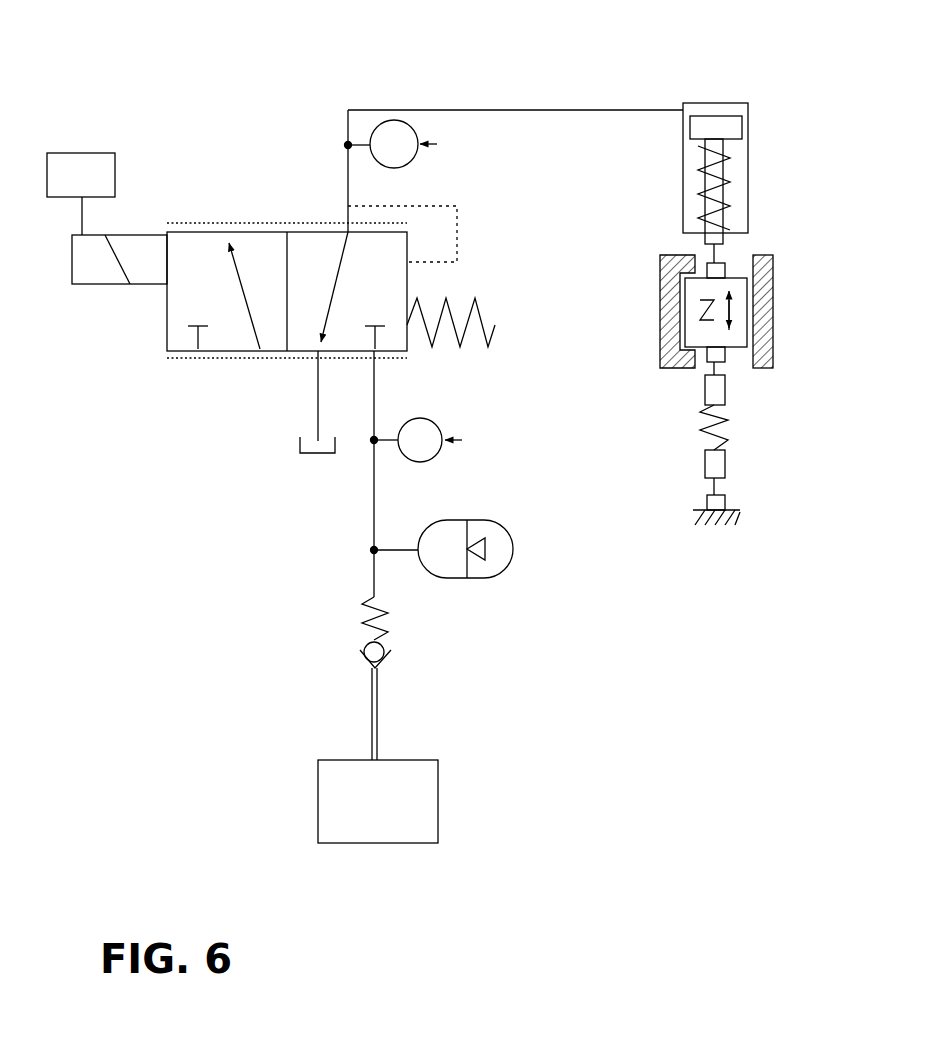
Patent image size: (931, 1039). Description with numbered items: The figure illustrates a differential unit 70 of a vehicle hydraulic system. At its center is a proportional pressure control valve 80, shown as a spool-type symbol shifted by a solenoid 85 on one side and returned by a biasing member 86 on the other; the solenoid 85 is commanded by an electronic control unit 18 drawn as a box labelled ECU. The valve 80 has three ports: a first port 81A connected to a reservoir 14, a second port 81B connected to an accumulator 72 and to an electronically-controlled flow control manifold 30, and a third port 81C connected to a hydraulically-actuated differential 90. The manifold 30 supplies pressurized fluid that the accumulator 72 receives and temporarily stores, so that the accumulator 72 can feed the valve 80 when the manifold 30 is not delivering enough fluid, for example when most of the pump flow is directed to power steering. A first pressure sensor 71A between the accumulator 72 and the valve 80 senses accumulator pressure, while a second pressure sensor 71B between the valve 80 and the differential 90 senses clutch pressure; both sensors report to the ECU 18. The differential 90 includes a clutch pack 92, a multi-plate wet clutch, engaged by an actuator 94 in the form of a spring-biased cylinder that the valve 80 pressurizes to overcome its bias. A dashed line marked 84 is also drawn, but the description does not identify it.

The electronic control unit 18 is at (88, 151).
The solenoid 85 is at (118, 292).
The proportional pressure control valve 80 is at (180, 163).
The third port 81C is at (331, 213).
The first port 81A is at (308, 367).
The second port 81B is at (387, 367).
The reservoir 14 is at (325, 456).
The second pressure sensor 71B is at (426, 167).
The first pressure sensor 71A is at (452, 423).
The accumulator 72 is at (506, 573).
The pilot line 84 is at (418, 272).
The biasing member 86 is at (505, 334).
The differential unit 70 is at (509, 86).
The hydraulically-actuated differential 90 is at (760, 87).
The actuator 94 is at (757, 174).
The clutch pack 92 is at (785, 272).
The electronically-controlled flow control manifold 30 is at (378, 720).